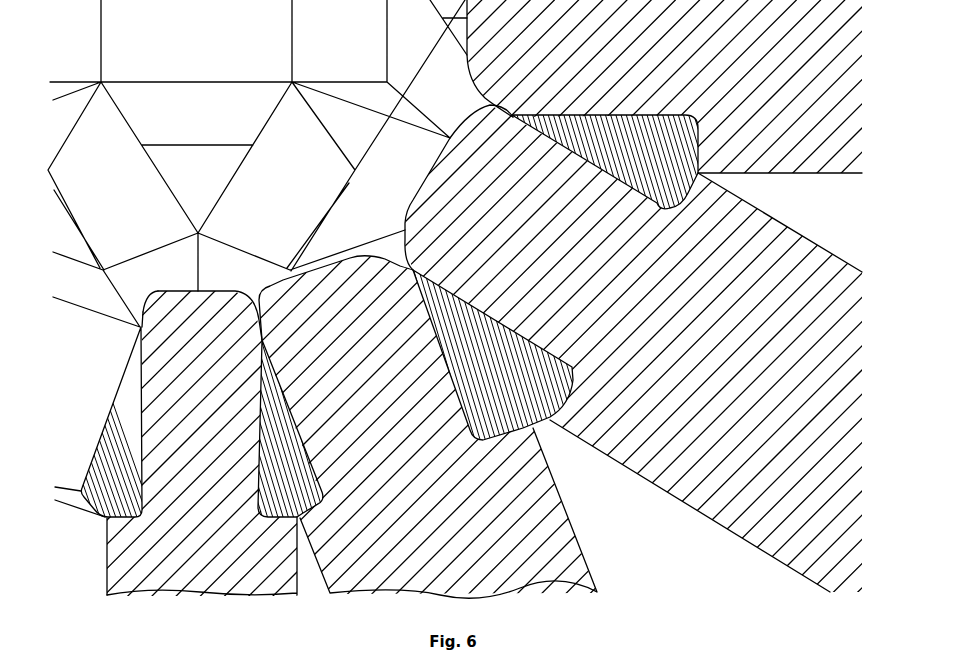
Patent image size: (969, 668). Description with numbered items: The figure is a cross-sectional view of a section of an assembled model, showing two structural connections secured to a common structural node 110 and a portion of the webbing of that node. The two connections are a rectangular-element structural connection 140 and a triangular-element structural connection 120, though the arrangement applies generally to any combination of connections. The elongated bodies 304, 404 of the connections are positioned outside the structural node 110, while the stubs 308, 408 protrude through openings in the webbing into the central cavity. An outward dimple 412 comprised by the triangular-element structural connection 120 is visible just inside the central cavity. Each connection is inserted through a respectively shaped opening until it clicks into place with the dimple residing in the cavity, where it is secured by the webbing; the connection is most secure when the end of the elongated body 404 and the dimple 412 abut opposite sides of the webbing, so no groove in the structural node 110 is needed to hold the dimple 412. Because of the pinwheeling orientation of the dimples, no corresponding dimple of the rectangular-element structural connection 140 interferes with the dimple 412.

The structural node 110 is at (110, 393).
The triangular-element structural connection 120 is at (484, 334).
The rectangular-element structural connection 140 is at (480, 538).
The elongated body 304 is at (573, 511).
The stub 308 is at (404, 259).
The elongated body 404 is at (103, 547).
The stub 408 is at (146, 298).
The outward dimple 412 is at (268, 325).